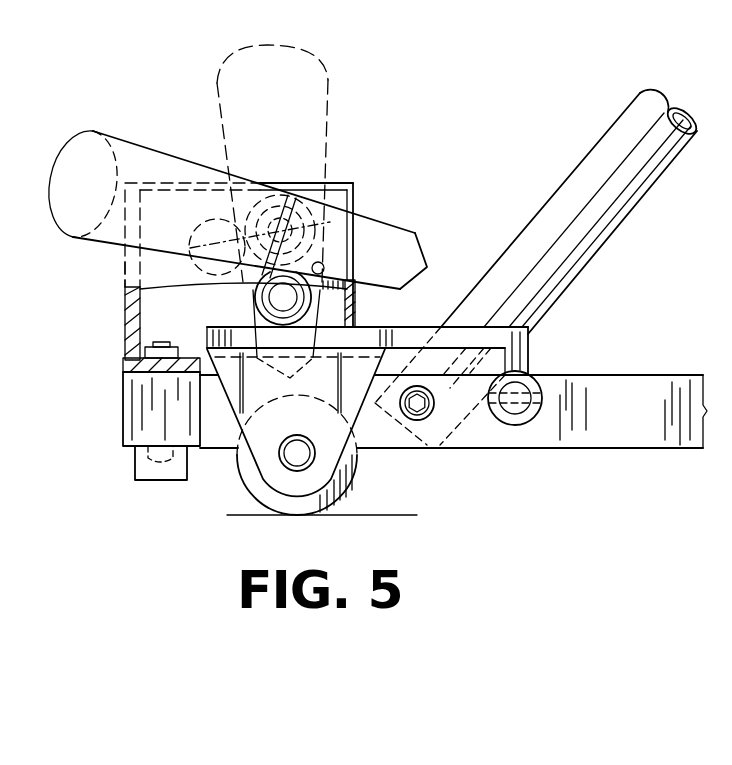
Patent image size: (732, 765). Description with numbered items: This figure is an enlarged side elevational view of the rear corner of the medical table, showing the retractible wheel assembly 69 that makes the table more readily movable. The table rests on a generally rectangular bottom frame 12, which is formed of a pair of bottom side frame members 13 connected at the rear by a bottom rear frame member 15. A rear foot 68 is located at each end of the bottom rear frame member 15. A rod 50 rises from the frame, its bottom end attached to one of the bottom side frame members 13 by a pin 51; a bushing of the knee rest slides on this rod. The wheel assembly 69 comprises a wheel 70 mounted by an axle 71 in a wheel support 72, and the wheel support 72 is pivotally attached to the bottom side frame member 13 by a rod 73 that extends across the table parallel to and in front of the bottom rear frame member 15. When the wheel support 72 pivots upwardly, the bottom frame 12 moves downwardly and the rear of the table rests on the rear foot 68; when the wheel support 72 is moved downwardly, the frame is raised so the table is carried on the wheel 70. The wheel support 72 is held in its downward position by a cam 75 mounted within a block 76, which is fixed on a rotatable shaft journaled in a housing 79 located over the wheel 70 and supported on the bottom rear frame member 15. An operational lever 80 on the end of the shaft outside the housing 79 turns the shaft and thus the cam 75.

The bottom frame 12 is at (453, 395).
The bottom side frame member 13 is at (548, 432).
The bottom rear frame member 15 is at (137, 395).
The rod 50 is at (637, 178).
The pin 51 is at (423, 412).
The rear foot 68 is at (140, 462).
The retractible wheel assembly 69 is at (121, 429).
The wheel 70 is at (253, 483).
The axle 71 is at (307, 460).
The wheel support 72 is at (402, 337).
The rod 73 is at (518, 388).
The cam 75 is at (187, 241).
The block 76 is at (357, 192).
The housing 79 is at (128, 262).
The operational lever 80 is at (150, 163).